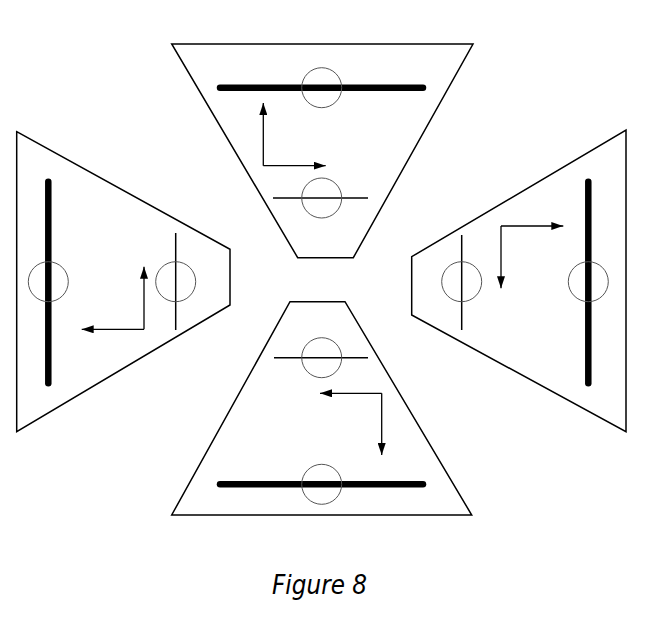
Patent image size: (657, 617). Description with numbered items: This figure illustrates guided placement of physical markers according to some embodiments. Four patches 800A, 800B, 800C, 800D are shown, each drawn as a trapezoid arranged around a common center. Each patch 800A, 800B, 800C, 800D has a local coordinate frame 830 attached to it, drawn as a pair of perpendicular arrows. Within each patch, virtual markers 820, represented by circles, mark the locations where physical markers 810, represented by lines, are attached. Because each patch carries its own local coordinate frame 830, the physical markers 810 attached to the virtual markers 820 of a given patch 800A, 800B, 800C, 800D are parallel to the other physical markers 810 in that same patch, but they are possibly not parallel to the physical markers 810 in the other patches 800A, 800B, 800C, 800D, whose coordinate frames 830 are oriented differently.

The patch 800A is at (322, 151).
The patch 800B is at (519, 281).
The patch 800C is at (322, 408).
The patch 800D is at (123, 282).
The physical markers 810 is at (363, 189).
The virtual markers 820 is at (339, 180).
The local coordinate frame 830 is at (261, 133).